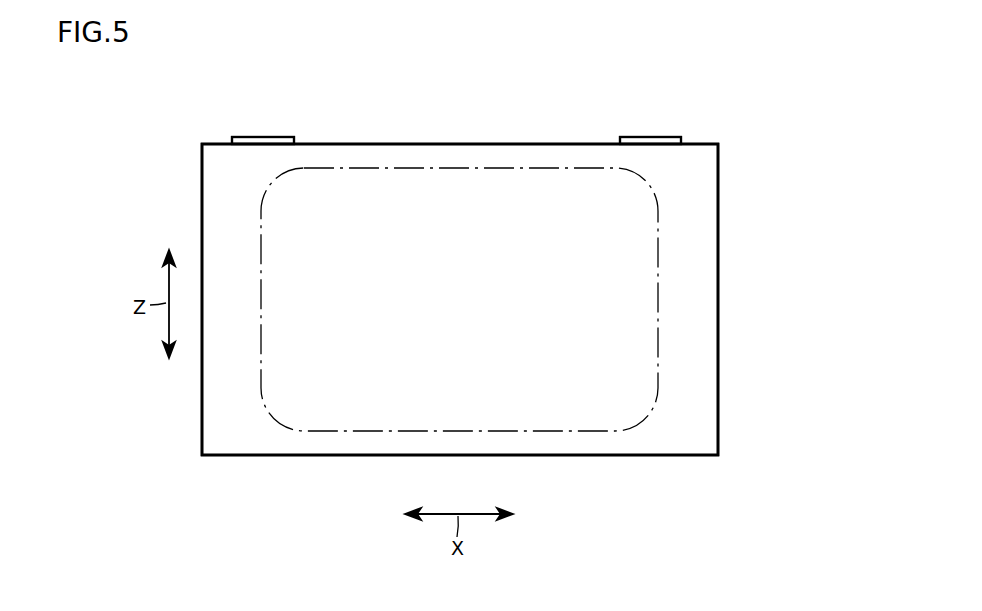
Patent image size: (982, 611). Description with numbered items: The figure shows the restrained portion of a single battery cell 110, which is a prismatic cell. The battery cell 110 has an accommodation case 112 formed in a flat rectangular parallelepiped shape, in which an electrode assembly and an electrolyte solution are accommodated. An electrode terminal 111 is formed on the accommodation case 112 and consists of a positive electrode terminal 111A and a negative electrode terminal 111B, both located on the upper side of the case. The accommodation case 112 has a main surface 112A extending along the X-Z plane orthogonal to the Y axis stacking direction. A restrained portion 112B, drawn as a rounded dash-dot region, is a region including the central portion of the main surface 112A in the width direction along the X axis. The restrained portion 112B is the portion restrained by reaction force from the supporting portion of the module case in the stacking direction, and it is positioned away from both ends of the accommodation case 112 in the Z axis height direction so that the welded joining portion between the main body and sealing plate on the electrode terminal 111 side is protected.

The battery cell 110 is at (205, 126).
The electrode terminal 111 is at (683, 92).
The positive electrode terminal 111A is at (260, 138).
The negative electrode terminal 111B is at (652, 138).
The accommodation case 112 is at (718, 360).
The main surface 112A is at (230, 199).
The restrained portion 112B is at (335, 431).